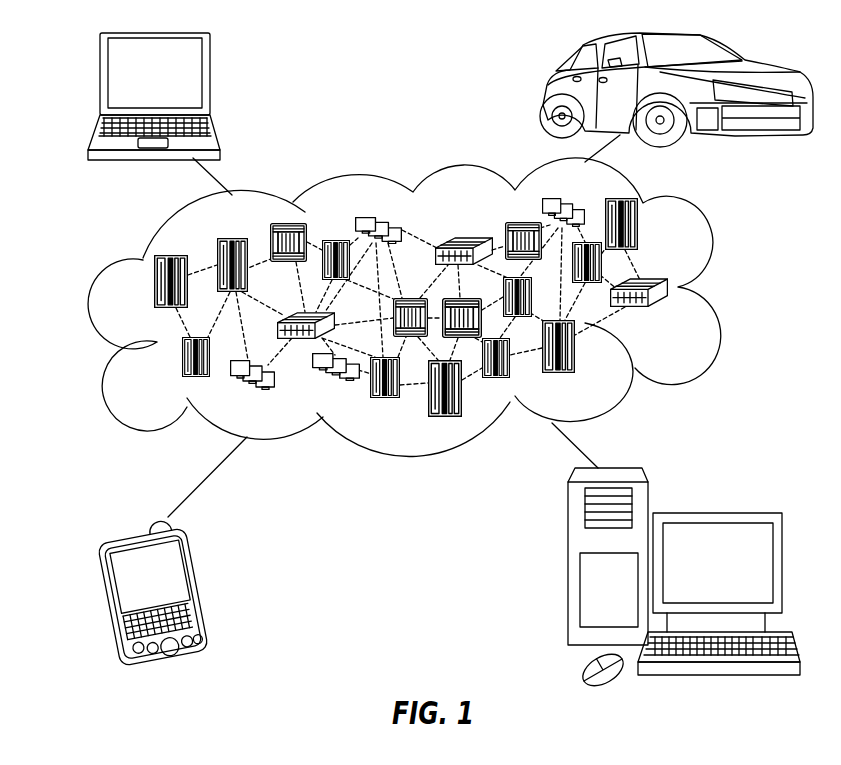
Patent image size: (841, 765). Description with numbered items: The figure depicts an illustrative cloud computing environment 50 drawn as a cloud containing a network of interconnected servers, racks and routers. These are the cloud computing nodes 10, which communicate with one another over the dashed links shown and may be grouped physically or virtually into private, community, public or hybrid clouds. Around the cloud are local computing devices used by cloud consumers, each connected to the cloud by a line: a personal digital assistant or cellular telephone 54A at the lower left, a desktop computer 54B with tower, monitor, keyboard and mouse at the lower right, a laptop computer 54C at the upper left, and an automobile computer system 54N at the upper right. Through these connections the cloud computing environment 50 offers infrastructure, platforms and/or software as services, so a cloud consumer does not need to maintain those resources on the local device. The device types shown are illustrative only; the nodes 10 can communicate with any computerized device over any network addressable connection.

The cloud computing nodes 10 is at (425, 307).
The cloud computing environment 50 is at (718, 290).
The personal digital assistant or cellular telephone 54A is at (197, 586).
The desktop computer 54B is at (717, 512).
The laptop computer 54C is at (208, 82).
The automobile computer system 54N is at (548, 93).